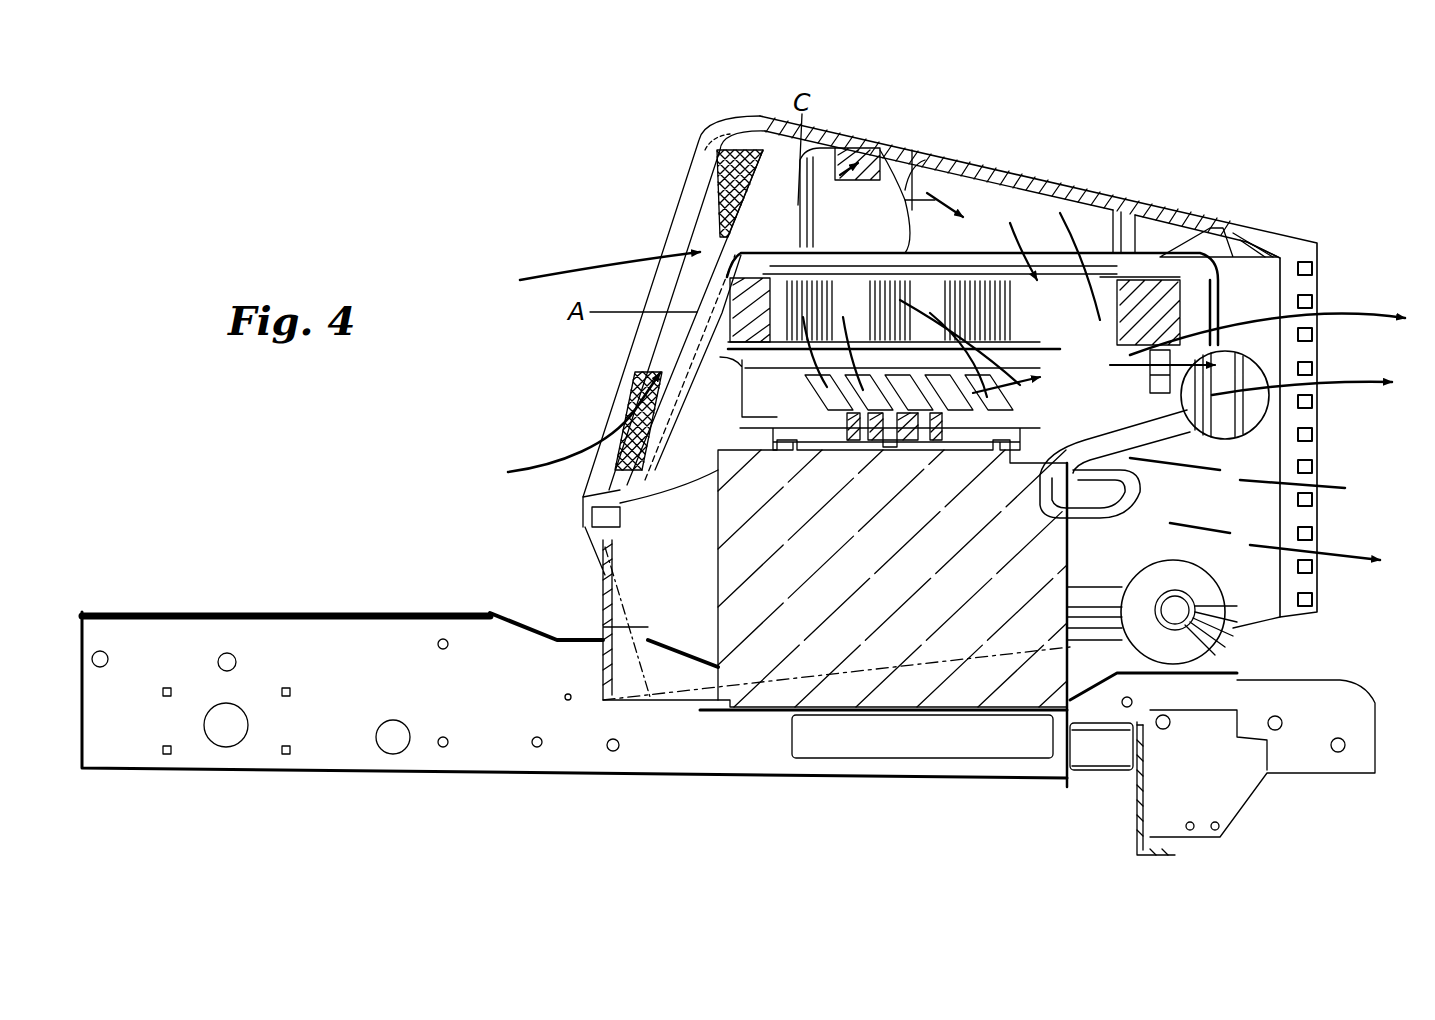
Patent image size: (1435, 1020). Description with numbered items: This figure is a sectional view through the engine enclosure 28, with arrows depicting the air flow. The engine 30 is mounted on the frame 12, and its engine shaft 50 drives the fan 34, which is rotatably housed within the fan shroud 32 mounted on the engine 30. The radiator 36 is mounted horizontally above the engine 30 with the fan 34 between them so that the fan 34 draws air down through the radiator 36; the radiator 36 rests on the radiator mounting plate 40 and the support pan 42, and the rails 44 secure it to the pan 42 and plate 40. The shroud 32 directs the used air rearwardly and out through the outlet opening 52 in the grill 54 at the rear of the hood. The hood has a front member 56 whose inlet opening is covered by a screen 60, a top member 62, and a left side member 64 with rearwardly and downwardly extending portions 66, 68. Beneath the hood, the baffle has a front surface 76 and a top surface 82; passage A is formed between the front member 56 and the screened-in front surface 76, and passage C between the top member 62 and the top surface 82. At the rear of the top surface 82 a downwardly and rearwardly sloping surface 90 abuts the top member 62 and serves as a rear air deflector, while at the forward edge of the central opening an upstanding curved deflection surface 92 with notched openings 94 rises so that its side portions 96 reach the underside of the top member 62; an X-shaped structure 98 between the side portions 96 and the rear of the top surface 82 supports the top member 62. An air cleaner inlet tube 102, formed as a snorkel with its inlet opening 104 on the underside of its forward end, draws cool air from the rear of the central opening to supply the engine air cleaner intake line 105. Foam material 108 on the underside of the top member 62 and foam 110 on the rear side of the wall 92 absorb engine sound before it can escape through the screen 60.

The frame 12 is at (366, 701).
The engine enclosure 28 is at (1192, 170).
The engine 30 is at (930, 602).
The fan shroud 32 is at (738, 427).
The fan 34 is at (1027, 405).
The radiator 36 is at (1160, 300).
The radiator mounting plate 40 is at (717, 365).
The support pan 42 is at (745, 385).
The rails 44 is at (1045, 360).
The engine shaft 50 is at (893, 443).
The outlet opening 52 is at (1307, 513).
The grill 54 is at (1320, 468).
The front member 56 is at (703, 175).
The screen 60 is at (706, 150).
The top member 62 is at (882, 150).
The left side member 64 is at (1263, 358).
The rearwardly extending portion 66 is at (1300, 322).
The downwardly extending portion 68 is at (620, 622).
The front surface 76 is at (703, 290).
The top surface 82 is at (723, 237).
The sloping surface 90 is at (1175, 240).
The deflection surface 92 is at (827, 233).
The notched openings 94 is at (882, 160).
The side portions 96 is at (900, 177).
The X-shaped structure 98 is at (972, 165).
The air cleaner inlet tube 102 is at (1228, 232).
The inlet opening 104 is at (1055, 250).
The engine air cleaner intake line 105 is at (1220, 338).
The foam material 108 is at (1120, 227).
The foam 110 is at (855, 155).